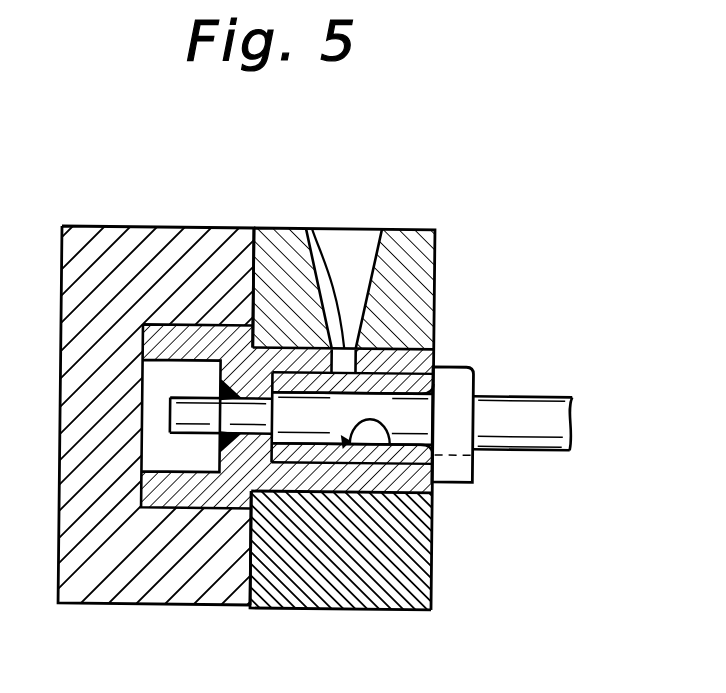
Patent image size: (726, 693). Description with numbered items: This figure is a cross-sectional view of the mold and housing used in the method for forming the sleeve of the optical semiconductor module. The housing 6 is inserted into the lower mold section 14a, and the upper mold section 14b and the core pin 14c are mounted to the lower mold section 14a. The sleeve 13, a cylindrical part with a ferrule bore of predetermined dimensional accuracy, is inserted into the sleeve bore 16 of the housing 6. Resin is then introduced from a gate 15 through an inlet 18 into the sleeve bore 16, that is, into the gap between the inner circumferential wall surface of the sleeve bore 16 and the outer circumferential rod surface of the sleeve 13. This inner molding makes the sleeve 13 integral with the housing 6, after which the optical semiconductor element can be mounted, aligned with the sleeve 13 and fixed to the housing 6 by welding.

The housing 6 is at (388, 348).
The sleeve 13 is at (434, 458).
The lower mold section 14a is at (112, 603).
The upper mold section 14b is at (360, 607).
The core pin 14c is at (553, 397).
The gate 15 is at (365, 232).
The sleeve bore 16 is at (390, 444).
The inlet 18 is at (312, 231).